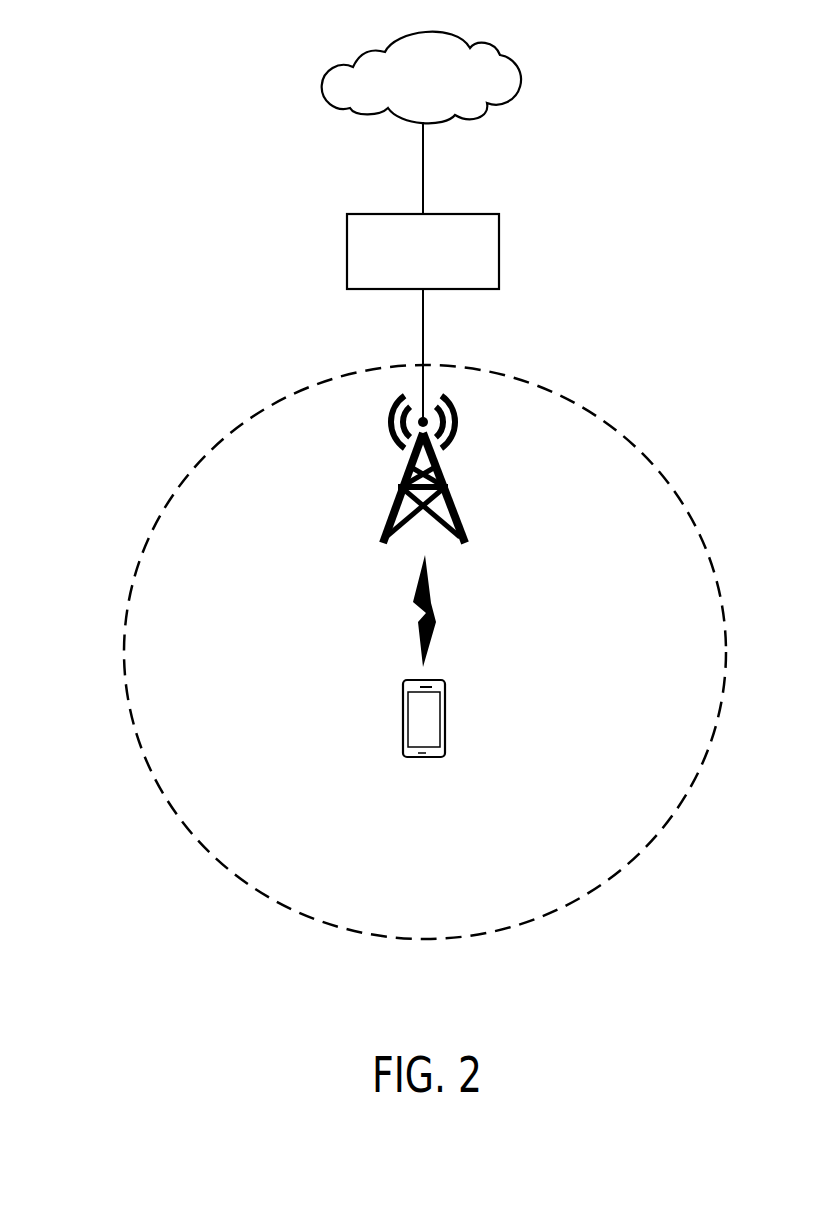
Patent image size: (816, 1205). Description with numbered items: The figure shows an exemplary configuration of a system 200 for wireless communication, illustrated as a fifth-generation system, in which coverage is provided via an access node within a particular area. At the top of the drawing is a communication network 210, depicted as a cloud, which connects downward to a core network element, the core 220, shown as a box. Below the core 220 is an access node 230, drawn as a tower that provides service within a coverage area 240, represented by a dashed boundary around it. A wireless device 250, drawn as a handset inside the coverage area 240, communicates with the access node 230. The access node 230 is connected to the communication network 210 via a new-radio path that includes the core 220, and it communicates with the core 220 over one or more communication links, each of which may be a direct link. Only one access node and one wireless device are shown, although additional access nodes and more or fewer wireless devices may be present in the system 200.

The system 200 is at (118, 70).
The communication network 210 is at (530, 75).
The 5G core 220 is at (347, 226).
The access node 230 is at (408, 472).
The coverage area 240 is at (175, 810).
The wireless device 250 is at (445, 732).